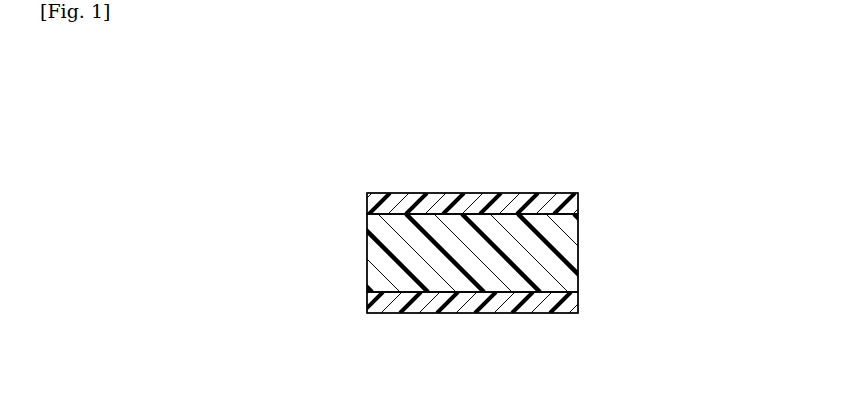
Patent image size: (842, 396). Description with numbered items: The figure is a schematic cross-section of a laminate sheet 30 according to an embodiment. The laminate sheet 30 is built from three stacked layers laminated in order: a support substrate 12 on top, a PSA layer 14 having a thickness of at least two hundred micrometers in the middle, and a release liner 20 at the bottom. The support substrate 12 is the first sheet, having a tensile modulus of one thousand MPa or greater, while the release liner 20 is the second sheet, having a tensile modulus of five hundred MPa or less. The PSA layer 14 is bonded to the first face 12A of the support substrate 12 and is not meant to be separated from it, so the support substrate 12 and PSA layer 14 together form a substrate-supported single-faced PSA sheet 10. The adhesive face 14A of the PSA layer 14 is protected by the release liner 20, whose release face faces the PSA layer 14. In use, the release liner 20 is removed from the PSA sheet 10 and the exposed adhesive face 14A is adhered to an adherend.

The laminate sheet 30 is at (343, 142).
The PSA sheet 10 is at (672, 184).
The support substrate 12 is at (578, 203).
The first face 12A is at (425, 218).
The PSA layer 14 is at (578, 232).
The adhesive face 14A is at (437, 293).
The release liner 20 is at (578, 304).